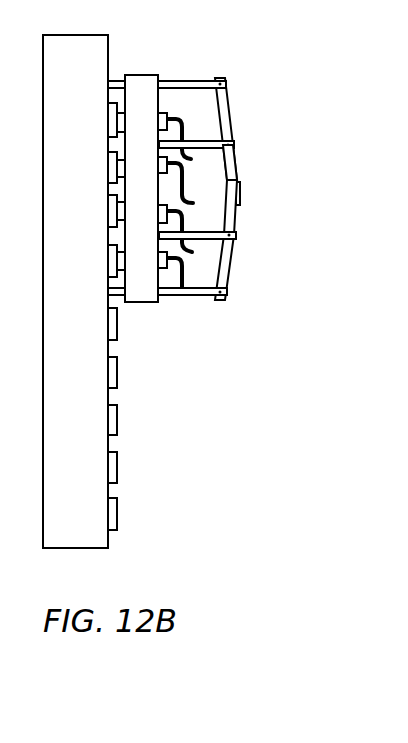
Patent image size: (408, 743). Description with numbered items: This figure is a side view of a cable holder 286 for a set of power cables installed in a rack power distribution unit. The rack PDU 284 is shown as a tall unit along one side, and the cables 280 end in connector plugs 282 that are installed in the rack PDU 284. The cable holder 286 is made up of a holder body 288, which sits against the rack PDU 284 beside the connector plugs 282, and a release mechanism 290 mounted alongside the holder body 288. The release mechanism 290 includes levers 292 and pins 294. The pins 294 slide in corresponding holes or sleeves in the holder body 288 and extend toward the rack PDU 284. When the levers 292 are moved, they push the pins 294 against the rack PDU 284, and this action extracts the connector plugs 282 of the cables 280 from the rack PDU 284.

The cables 280 is at (186, 277).
The connector plugs 282 is at (162, 113).
The rack PDU 284 is at (93, 77).
The cable holder 286 is at (219, 218).
The holder body 288 is at (136, 76).
The release mechanism 290 is at (260, 158).
The levers 292 is at (234, 228).
The pins 294 is at (172, 220).